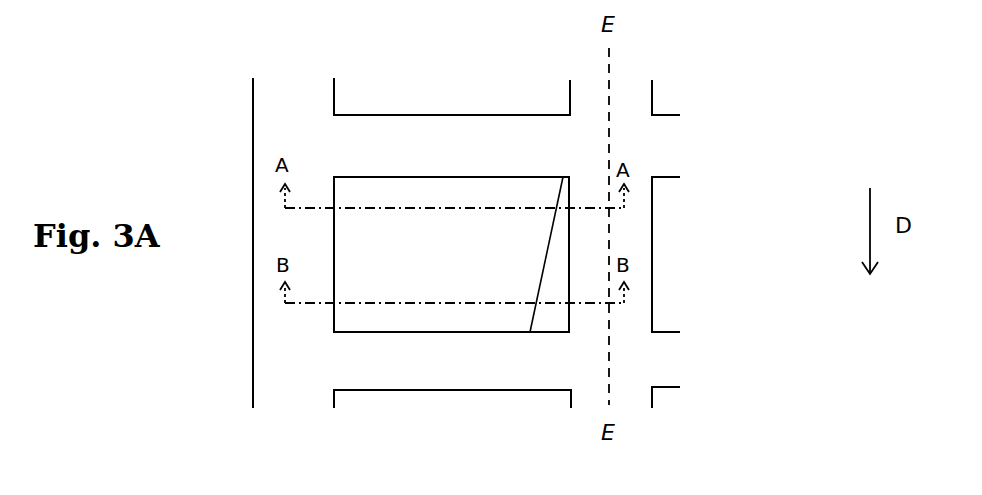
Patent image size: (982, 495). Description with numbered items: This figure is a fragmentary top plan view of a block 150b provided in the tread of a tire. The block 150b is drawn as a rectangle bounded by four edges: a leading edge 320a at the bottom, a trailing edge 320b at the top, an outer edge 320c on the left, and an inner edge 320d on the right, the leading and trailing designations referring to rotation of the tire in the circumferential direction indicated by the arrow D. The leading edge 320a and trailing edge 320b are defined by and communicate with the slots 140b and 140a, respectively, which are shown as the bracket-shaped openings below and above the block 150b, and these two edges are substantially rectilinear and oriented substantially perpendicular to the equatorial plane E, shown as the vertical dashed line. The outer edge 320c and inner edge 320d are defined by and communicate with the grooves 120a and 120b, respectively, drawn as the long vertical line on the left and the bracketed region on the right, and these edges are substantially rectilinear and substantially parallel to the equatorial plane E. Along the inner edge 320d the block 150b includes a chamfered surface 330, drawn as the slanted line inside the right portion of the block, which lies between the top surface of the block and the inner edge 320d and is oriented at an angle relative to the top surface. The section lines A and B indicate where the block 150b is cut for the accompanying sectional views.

The groove 120a is at (291, 400).
The groove 120b is at (632, 405).
The slot 140a is at (487, 163).
The slot 140b is at (490, 377).
The block 150b is at (492, 272).
The chamfered surface 330 is at (555, 318).
The leading edge 320a is at (395, 333).
The trailing edge 320b is at (517, 176).
The outer edge 320c is at (334, 240).
The inner edge 320d is at (569, 240).